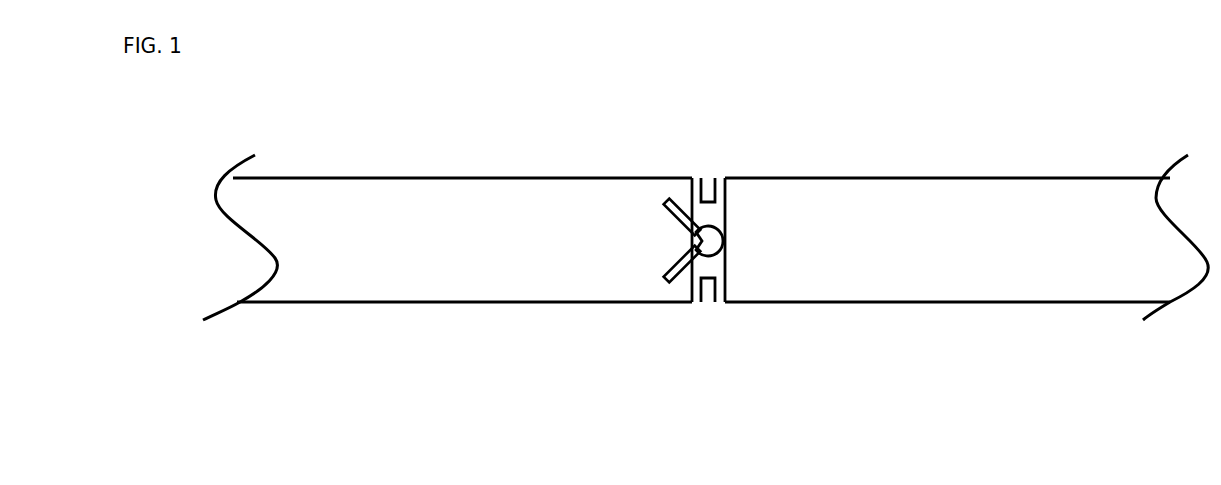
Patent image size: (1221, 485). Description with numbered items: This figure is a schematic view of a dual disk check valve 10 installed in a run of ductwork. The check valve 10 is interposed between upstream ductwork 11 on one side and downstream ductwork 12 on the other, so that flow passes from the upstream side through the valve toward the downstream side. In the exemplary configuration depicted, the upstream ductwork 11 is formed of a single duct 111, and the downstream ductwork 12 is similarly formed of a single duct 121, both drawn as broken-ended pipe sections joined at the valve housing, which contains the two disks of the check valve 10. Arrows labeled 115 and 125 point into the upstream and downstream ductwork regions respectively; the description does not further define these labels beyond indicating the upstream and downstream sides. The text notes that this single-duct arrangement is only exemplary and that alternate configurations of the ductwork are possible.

The dual disk check valve 10 is at (703, 303).
The upstream ductwork 11 is at (951, 303).
The downstream ductwork 12 is at (425, 303).
The single duct 111 is at (933, 178).
The single duct 121 is at (473, 178).
The upstream side flow passage 115 is at (755, 275).
The downstream side flow passage 125 is at (631, 258).